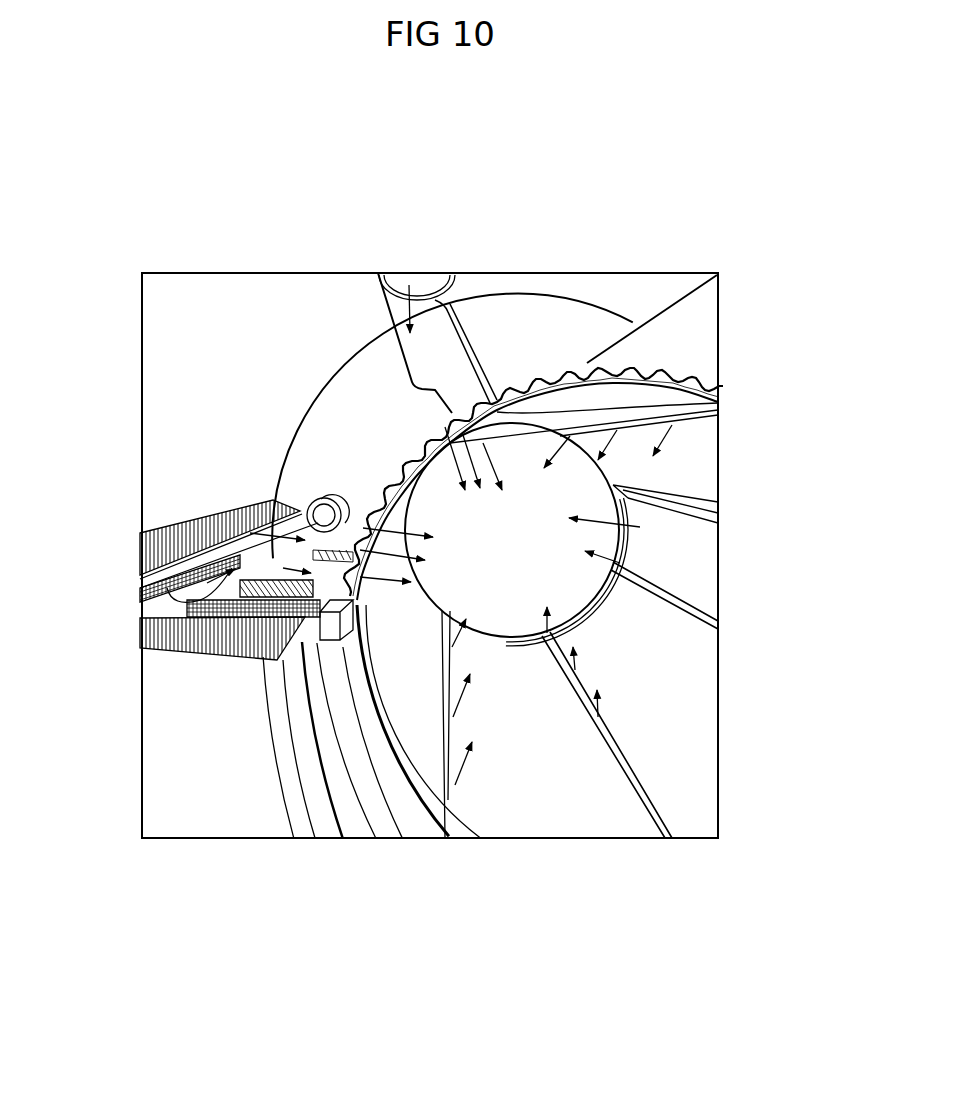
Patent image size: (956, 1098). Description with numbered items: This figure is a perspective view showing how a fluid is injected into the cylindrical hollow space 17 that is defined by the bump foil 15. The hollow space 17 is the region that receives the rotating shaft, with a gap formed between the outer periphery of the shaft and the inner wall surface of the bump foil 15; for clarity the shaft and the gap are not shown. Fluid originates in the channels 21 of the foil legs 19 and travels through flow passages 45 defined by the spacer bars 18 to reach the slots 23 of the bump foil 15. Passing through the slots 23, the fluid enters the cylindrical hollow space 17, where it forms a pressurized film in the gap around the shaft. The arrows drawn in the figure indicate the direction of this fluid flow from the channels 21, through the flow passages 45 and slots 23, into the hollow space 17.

The bump foil 15 is at (392, 763).
The cylindrical hollow space 17 is at (590, 518).
The spacer bars 18 is at (300, 508).
The foil legs 19 is at (462, 315).
The channels 21 is at (388, 308).
The slots 23 is at (367, 602).
The flow passages 45 is at (318, 514).